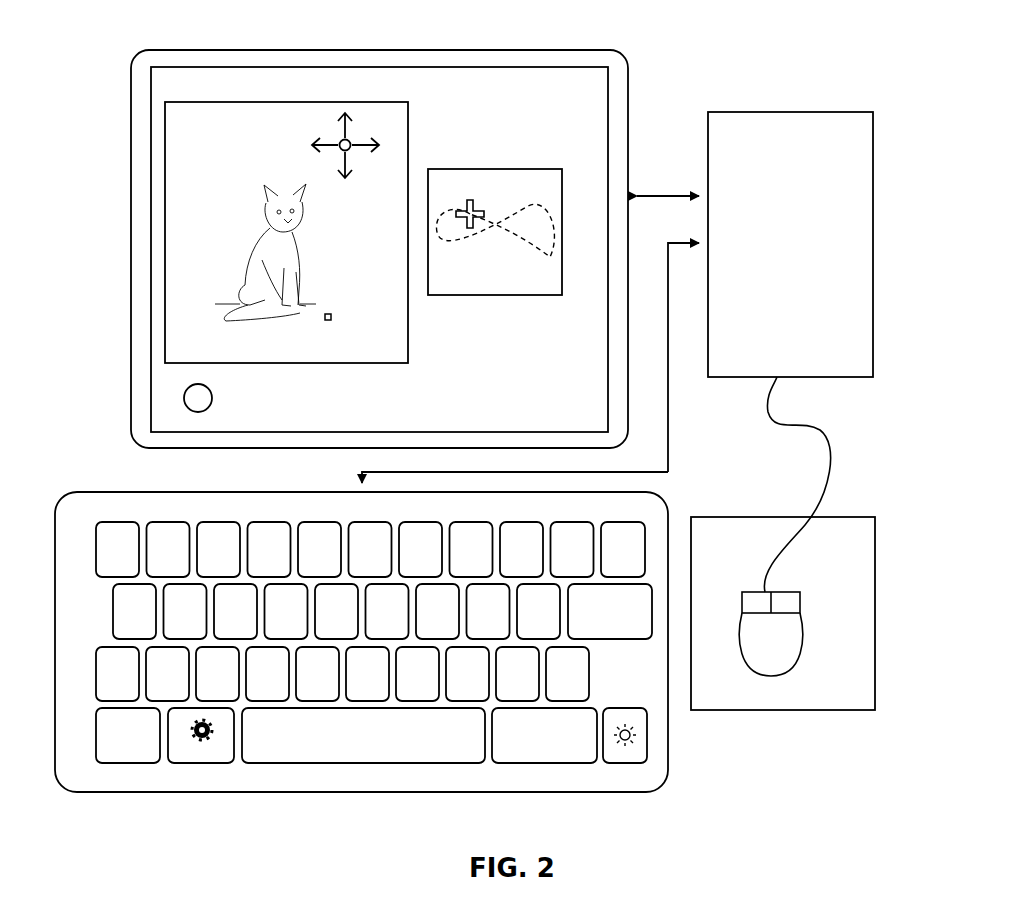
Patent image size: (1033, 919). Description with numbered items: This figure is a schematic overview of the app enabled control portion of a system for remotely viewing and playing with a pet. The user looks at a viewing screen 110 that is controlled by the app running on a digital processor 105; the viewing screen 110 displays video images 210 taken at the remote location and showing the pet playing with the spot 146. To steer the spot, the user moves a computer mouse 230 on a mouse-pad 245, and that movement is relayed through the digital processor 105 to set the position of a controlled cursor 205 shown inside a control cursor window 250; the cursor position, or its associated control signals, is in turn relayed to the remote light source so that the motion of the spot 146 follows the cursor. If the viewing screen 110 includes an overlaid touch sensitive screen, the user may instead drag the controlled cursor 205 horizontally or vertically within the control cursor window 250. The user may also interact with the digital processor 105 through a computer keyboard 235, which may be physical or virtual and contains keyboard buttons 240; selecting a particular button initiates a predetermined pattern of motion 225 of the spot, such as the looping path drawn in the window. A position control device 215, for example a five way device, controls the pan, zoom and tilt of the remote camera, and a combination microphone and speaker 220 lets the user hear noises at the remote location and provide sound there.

The digital processor 105 is at (775, 112).
The viewing screen 110 is at (196, 66).
The spot 146 is at (328, 323).
The controlled cursor 205 is at (470, 202).
The video images 210 is at (165, 202).
The position control device 215 is at (340, 142).
The combination microphone and speaker 220 is at (184, 400).
The predetermined pattern of motion 225 is at (528, 206).
The computer mouse 230 is at (790, 673).
The computer keyboard 235 is at (361, 677).
The keyboard buttons 240 is at (200, 764).
The mouse-pad 245 is at (737, 710).
The control cursor window 250 is at (500, 169).